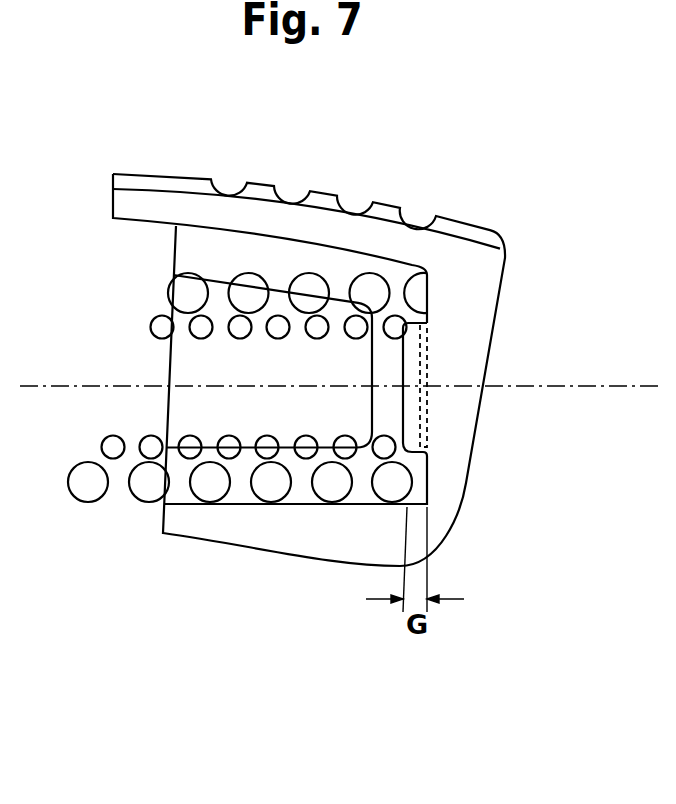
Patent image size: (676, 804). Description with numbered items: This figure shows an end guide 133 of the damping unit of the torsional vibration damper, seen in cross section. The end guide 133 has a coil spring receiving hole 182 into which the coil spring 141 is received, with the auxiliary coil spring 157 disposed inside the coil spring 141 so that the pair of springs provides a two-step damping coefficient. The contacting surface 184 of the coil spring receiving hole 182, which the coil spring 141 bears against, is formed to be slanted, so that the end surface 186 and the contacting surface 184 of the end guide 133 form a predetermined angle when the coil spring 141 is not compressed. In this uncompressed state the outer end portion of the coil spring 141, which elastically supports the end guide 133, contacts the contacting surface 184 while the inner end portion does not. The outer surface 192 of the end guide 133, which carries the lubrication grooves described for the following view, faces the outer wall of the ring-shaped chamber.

The end guide 133 is at (450, 157).
The outer surface 192 is at (457, 222).
The coil spring receiving hole 182 is at (266, 378).
The contacting surface 184 is at (428, 475).
The end surface 186 is at (423, 358).
The coil spring 141 is at (83, 501).
The auxiliary coil spring 157 is at (112, 436).